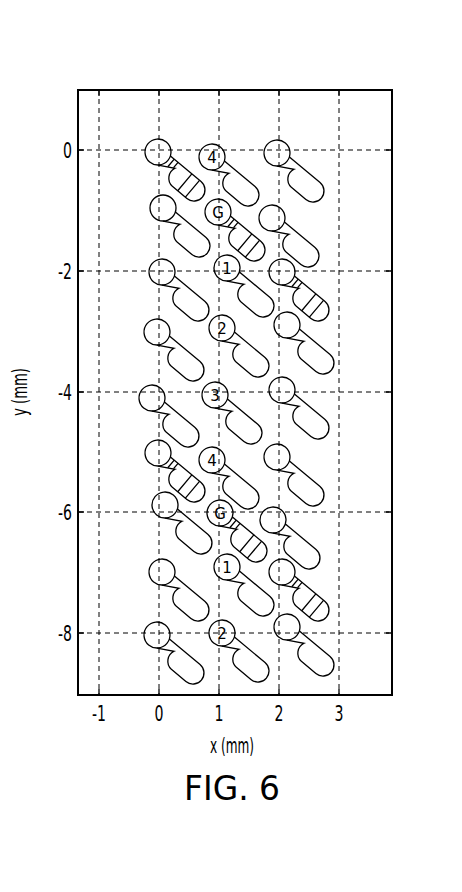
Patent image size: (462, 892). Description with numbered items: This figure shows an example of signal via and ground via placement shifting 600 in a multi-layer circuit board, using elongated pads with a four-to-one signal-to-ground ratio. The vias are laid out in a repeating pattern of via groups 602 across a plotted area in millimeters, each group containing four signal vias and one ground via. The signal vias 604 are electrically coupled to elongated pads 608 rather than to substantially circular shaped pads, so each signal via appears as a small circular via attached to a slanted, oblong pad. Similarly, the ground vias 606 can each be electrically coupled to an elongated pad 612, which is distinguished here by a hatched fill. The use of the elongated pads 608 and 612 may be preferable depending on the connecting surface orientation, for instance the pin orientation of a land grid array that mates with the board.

The signal via and ground via placement shifting 600 is at (237, 59).
The via groups 602 is at (298, 108).
The signal vias 604 is at (134, 209).
The ground vias 606 is at (123, 370).
The elongated pads 608 is at (153, 249).
The elongated pad 612 is at (188, 147).